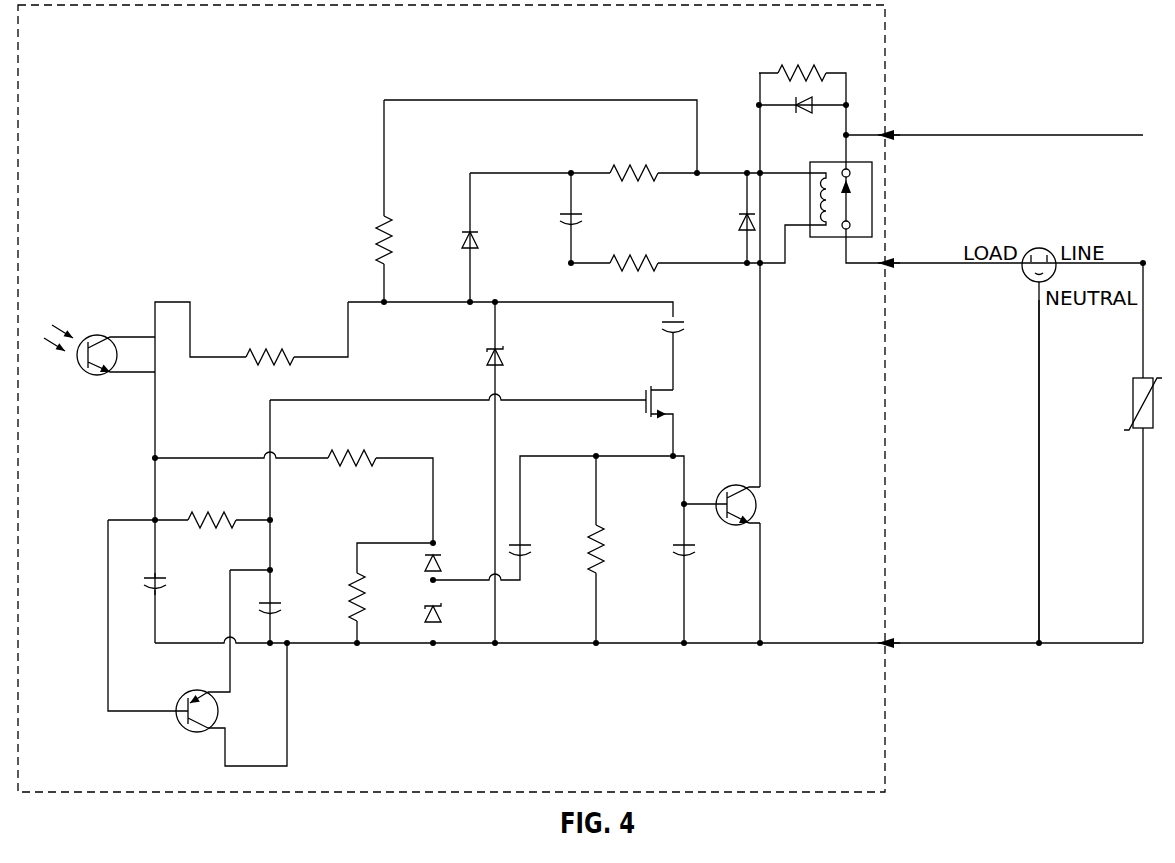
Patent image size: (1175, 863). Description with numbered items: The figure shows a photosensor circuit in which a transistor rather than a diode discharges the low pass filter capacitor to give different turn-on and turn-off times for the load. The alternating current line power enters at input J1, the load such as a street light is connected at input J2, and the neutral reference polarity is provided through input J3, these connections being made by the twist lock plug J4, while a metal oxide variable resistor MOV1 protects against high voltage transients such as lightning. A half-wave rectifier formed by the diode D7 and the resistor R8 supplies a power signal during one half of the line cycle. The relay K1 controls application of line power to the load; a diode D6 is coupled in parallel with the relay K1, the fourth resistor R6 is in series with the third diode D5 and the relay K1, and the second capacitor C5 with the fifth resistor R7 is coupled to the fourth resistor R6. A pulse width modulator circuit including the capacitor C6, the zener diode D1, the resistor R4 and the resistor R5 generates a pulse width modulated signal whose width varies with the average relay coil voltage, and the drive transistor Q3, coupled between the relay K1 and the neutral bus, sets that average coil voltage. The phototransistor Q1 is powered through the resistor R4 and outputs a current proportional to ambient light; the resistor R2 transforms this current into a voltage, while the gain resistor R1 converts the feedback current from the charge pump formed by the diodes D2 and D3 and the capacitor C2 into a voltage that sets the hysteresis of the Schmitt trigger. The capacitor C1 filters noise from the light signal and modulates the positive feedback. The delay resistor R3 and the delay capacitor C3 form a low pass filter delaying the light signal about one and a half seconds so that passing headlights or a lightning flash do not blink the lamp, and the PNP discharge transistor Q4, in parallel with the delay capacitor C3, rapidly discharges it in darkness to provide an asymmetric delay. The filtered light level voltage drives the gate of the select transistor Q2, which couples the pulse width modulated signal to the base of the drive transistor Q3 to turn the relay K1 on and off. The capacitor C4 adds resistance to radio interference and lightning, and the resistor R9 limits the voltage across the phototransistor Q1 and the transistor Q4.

The phototransistor Q1 is at (99, 350).
The select transistor Q2 is at (702, 417).
The drive transistor Q3 is at (786, 505).
The discharge transistor Q4 is at (197, 723).
The gain resistor R1 is at (373, 638).
The resistor R2 is at (354, 434).
The delay resistor R3 is at (219, 495).
The resistor R4 is at (351, 239).
The resistor R5 is at (623, 549).
The fourth resistor R6 is at (634, 147).
The fifth resistor R7 is at (634, 238).
The resistor R8 is at (805, 48).
The resistor R9 is at (270, 339).
The capacitor C1 is at (181, 563).
The capacitor C2 is at (546, 524).
The delay capacitor C3 is at (300, 585).
The capacitor C4 is at (717, 556).
The second capacitor C5 is at (537, 217).
The capacitor C6 is at (704, 346).
The zener diode D1 is at (520, 352).
The diode D2 is at (466, 653).
The diode D3 is at (451, 557).
The third diode D5 is at (457, 227).
The diode D6 is at (761, 208).
The diode D7 is at (804, 129).
The relay K1 is at (904, 199).
The input J1 is at (900, 127).
The input J2 is at (900, 254).
The input J3 is at (899, 633).
The plug J4 is at (1016, 471).
The metal oxide variable resistor MOV1 is at (1123, 391).